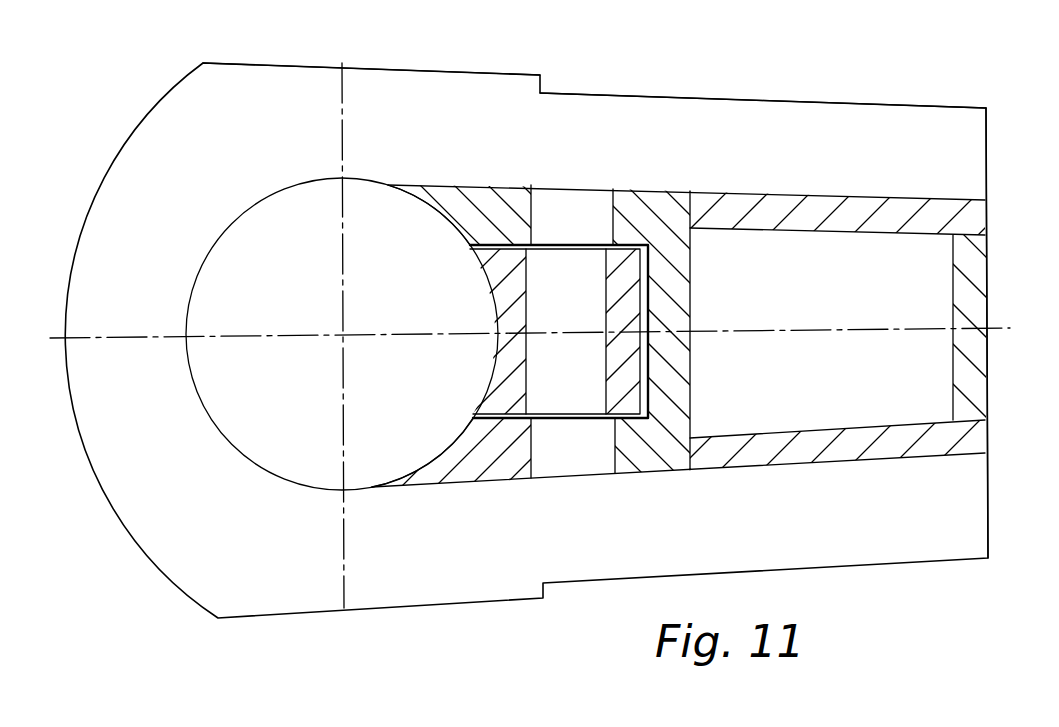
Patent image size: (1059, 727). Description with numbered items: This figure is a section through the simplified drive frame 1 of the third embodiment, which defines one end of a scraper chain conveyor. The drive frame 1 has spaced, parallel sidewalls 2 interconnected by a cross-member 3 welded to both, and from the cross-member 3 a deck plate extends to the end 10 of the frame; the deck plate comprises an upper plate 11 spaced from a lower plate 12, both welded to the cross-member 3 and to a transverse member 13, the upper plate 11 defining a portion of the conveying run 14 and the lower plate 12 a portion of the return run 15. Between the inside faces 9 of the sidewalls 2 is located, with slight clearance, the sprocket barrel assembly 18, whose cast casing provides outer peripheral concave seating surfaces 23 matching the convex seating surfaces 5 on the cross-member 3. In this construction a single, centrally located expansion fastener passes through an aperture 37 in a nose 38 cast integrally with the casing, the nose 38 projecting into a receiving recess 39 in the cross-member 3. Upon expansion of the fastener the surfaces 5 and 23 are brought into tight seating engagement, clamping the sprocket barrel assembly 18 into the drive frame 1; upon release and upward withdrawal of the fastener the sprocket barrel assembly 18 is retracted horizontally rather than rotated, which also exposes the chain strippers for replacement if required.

The drive frame 1 is at (696, 94).
The sidewalls 2 is at (882, 120).
The cross-member 3 is at (692, 285).
The convex seating surfaces 5 is at (432, 203).
The inside faces 9 is at (404, 92).
The end 10 is at (991, 168).
The upper plate 11 is at (860, 212).
The lower plate 12 is at (847, 440).
The transverse member 13 is at (958, 302).
The conveying run 14 is at (802, 163).
The return run 15 is at (776, 538).
The sprocket barrel assembly 18 is at (230, 228).
The concave seating surfaces 23 is at (456, 224).
The aperture 37 is at (526, 381).
The nose 38 is at (624, 268).
The receiving recess 39 is at (492, 254).